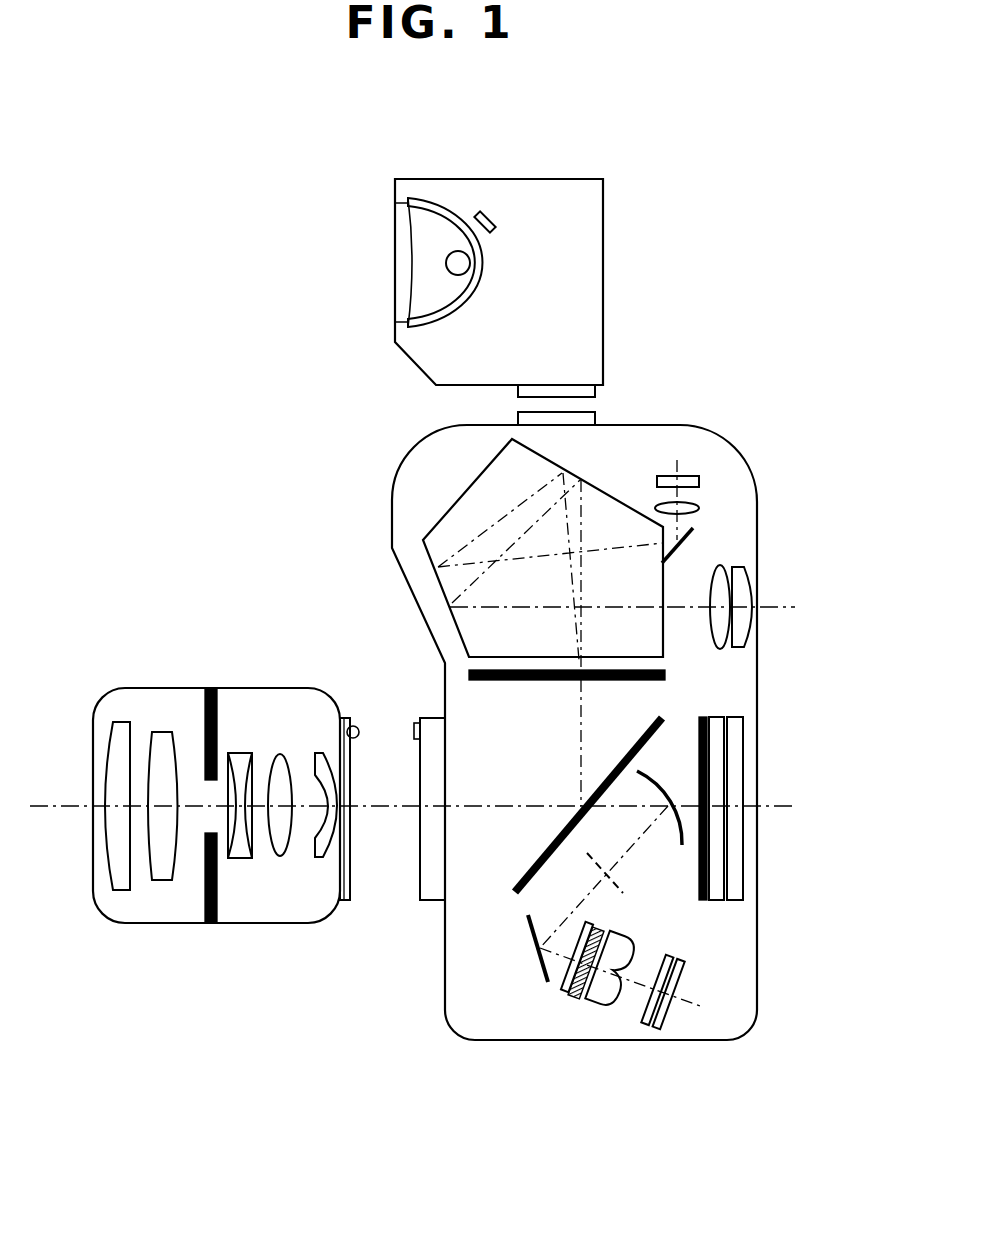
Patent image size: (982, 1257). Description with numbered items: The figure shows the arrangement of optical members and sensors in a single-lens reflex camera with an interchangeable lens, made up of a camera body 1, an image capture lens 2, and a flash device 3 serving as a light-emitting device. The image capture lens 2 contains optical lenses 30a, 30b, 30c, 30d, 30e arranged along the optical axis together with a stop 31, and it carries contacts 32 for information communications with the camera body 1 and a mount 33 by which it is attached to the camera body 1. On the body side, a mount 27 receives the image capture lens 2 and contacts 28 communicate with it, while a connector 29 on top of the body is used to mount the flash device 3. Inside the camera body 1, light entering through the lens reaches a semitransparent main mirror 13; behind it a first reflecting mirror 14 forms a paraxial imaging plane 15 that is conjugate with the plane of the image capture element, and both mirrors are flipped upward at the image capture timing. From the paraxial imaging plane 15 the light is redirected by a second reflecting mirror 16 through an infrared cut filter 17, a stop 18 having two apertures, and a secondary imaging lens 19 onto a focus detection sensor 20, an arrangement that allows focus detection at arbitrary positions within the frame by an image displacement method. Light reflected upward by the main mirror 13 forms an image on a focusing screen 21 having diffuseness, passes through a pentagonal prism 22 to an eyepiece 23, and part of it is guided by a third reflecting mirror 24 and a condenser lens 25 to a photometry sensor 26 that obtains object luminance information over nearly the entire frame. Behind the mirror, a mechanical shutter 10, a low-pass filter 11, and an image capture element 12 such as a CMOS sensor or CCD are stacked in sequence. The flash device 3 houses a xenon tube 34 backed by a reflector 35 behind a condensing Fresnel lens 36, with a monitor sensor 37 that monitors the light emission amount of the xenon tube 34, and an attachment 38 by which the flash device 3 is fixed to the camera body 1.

The camera body 1 is at (392, 494).
The image capture lens 2 is at (140, 688).
The flash device 3 is at (553, 179).
The mechanical shutter 10 is at (703, 717).
The low-pass filter 11 is at (715, 838).
The image capture element 12 is at (735, 868).
The main mirror 13 is at (662, 718).
The first reflecting mirror 14 is at (648, 778).
The paraxial imaging plane 15 is at (615, 882).
The second reflecting mirror 16 is at (528, 932).
The infrared cut filter 17 is at (560, 995).
The stop 18 is at (578, 1000).
The secondary imaging lens 19 is at (603, 1002).
The focus detection sensor 20 is at (676, 985).
The focusing screen 21 is at (503, 681).
The pentagonal prism 22 is at (450, 522).
The eyepiece 23 is at (745, 585).
The third reflecting mirror 24 is at (696, 530).
The condenser lens 25 is at (700, 508).
The photometry sensor 26 is at (690, 475).
The mount 27 is at (430, 902).
The contacts 28 is at (418, 722).
The connector 29 is at (518, 418).
The optical lens 30a is at (115, 875).
The optical lens 30b is at (165, 880).
The optical lens 30c is at (240, 860).
The optical lens 30d is at (282, 855).
The optical lens 30e is at (320, 860).
The stop 31 is at (216, 712).
The contacts 32 is at (354, 726).
The mount 33 is at (352, 880).
The xenon tube 34 is at (463, 268).
The reflector 35 is at (447, 200).
The condensing Fresnel lens 36 is at (395, 232).
The monitor sensor 37 is at (493, 214).
The attachment 38 is at (595, 391).